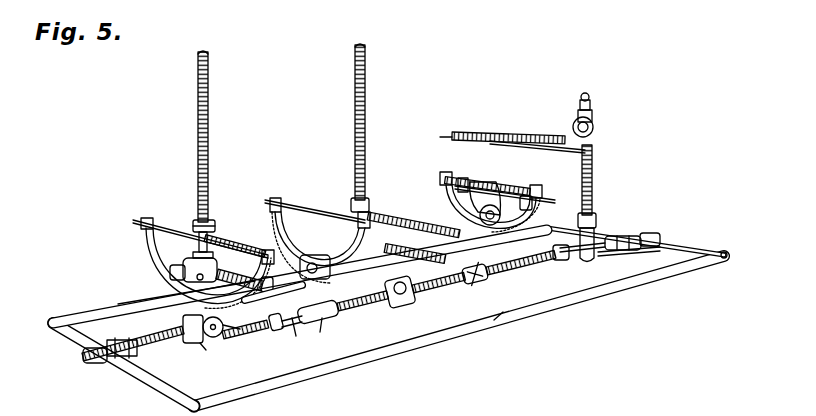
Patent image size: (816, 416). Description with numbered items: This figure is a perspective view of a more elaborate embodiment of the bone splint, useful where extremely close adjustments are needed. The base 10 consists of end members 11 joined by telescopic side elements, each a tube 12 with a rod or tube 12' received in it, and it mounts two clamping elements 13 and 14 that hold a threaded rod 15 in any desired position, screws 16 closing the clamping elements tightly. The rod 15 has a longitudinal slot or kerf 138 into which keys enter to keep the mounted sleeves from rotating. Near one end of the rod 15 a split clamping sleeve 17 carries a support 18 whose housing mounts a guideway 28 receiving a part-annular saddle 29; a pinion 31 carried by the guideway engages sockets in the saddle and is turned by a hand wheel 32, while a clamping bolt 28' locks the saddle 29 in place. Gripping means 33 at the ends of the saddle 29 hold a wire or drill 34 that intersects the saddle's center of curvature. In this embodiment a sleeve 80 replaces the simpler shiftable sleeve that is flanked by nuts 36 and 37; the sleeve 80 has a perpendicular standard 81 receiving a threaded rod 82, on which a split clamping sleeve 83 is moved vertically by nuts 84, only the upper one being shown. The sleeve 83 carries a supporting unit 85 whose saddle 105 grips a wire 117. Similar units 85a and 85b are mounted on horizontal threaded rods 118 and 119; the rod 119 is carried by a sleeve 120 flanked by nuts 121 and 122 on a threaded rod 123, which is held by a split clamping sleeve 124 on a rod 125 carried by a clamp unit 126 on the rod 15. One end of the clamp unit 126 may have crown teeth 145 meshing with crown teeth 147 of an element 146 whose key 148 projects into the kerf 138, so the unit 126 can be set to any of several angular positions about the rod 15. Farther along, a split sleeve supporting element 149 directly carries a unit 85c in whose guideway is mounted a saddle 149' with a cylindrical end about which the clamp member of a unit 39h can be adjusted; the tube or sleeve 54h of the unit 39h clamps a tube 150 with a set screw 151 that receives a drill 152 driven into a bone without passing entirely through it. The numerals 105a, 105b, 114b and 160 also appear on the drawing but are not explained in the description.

The base 10 is at (92, 296).
The end member 11 is at (152, 383).
The tube 12 is at (289, 276).
The rod or tube 12' is at (518, 323).
The clamping element 13 is at (120, 342).
The clamping element 14 is at (622, 240).
The threaded rod 15 is at (528, 268).
The screw 16 is at (646, 237).
The split clamping sleeve 17 is at (200, 346).
The support 18 is at (183, 320).
The guideway 28 is at (186, 293).
The clamping bolt 28' is at (113, 305).
The part-annular saddle 29 is at (146, 252).
The pinion 31 is at (230, 327).
The hand wheel 32 is at (215, 338).
The gripping means 33 is at (148, 217).
The wire or drill 34 is at (184, 228).
The nut 36 is at (540, 250).
The nut 37 is at (622, 251).
The unit 39h is at (446, 224).
The tube or sleeve 54h is at (481, 188).
The sleeve 80 is at (597, 260).
The perpendicular standard 81 is at (597, 227).
The threaded rod 82 is at (594, 179).
The split clamping sleeve 83 is at (594, 121).
The nut 84 is at (592, 105).
The supporting unit 85 is at (568, 106).
The unit 85a is at (491, 202).
The unit 85b is at (322, 255).
The unit 85c is at (413, 297).
The saddle 105 is at (471, 132).
The threaded rod 105a is at (442, 183).
The threaded rod 105b is at (233, 247).
The rod 114b is at (304, 207).
The wire 117 is at (519, 139).
The threaded rod 118 is at (376, 214).
The threaded rod 119 is at (214, 236).
The sleeve 120 is at (196, 244).
The nut 121 is at (218, 264).
The nut 122 is at (213, 222).
The threaded rod 123 is at (210, 150).
The split clamping sleeve 124 is at (182, 276).
The rod 125 is at (292, 290).
The clamp unit 126 is at (350, 315).
The slot or kerf 138 is at (95, 361).
The crown teeth 145 is at (328, 319).
The element 146 is at (298, 333).
The crown teeth 147 is at (321, 320).
The key 148 is at (277, 320).
The split sleeve supporting element 149 is at (389, 298).
The saddle 149' is at (474, 286).
The tube 150 is at (462, 178).
The set screw 151 is at (518, 195).
The drill 152 is at (534, 206).
The element 160 is at (649, 415).